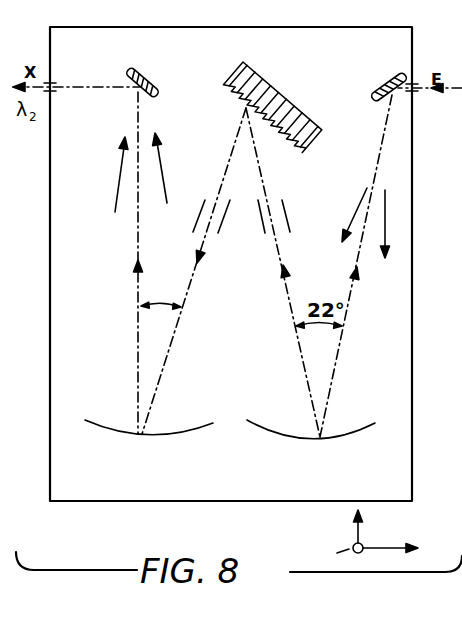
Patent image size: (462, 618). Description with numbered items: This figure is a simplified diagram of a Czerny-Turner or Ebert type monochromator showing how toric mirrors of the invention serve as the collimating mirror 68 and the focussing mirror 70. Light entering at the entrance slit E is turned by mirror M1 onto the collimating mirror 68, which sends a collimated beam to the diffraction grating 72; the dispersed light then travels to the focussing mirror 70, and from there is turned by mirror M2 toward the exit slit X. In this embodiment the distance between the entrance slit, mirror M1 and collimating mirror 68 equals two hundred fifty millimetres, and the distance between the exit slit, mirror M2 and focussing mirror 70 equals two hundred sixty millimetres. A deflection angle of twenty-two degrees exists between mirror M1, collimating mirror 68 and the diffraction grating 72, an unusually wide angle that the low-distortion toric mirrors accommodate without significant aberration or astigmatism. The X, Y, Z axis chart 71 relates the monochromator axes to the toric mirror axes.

The collimating mirror 68 is at (357, 430).
The focussing mirror 70 is at (205, 424).
The coordinate system 71 is at (350, 530).
The diffraction grating 72 is at (268, 52).
The mirror M1 is at (382, 85).
The mirror M2 is at (142, 74).